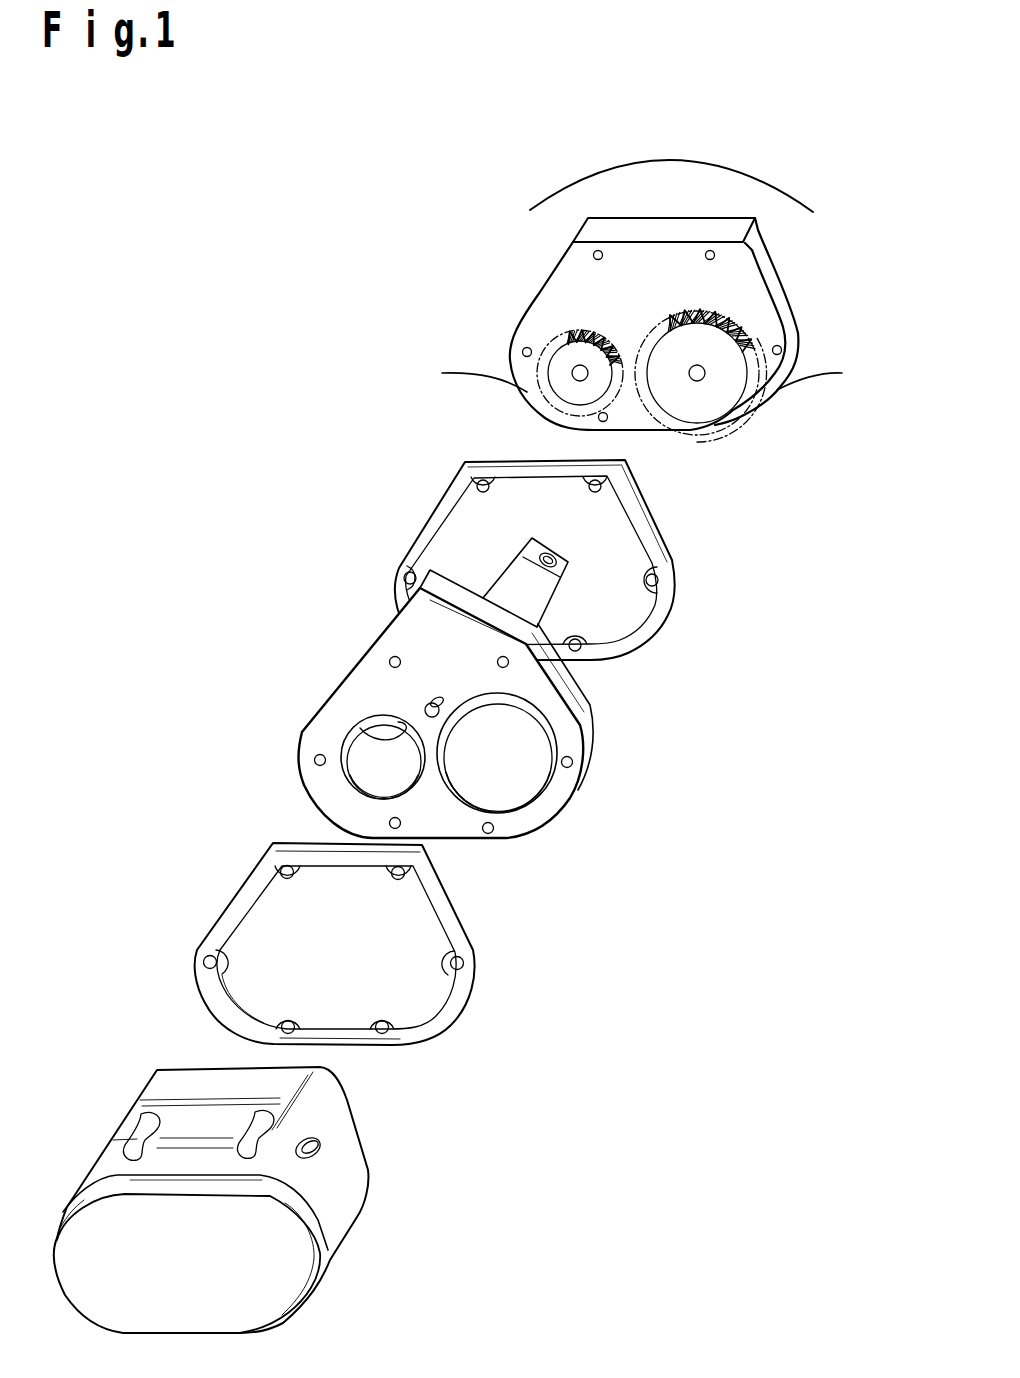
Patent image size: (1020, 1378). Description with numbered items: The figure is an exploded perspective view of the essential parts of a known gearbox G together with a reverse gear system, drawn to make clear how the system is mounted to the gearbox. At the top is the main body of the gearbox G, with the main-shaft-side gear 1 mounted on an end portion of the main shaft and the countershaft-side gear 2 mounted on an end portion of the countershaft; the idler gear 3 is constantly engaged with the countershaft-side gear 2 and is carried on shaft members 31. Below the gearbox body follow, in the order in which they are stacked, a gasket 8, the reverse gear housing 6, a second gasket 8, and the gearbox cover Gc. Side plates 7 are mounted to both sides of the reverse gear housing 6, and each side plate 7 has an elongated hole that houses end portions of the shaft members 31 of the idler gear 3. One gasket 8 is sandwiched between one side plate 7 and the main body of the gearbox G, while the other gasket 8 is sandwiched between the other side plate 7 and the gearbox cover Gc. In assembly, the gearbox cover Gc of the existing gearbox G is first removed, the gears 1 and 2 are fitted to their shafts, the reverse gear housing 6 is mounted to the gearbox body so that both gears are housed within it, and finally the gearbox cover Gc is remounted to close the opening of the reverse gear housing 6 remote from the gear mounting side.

The gearbox G is at (657, 243).
The main-shaft-side gear 1 is at (553, 347).
The countershaft-side gear 2 is at (723, 368).
The gaskets 8 is at (437, 503).
The reverse gear housing 6 is at (583, 733).
The side plates 7 is at (578, 694).
The shaft members 31 is at (427, 708).
The idler gear 3 is at (360, 728).
The gearbox cover Gc is at (323, 1215).